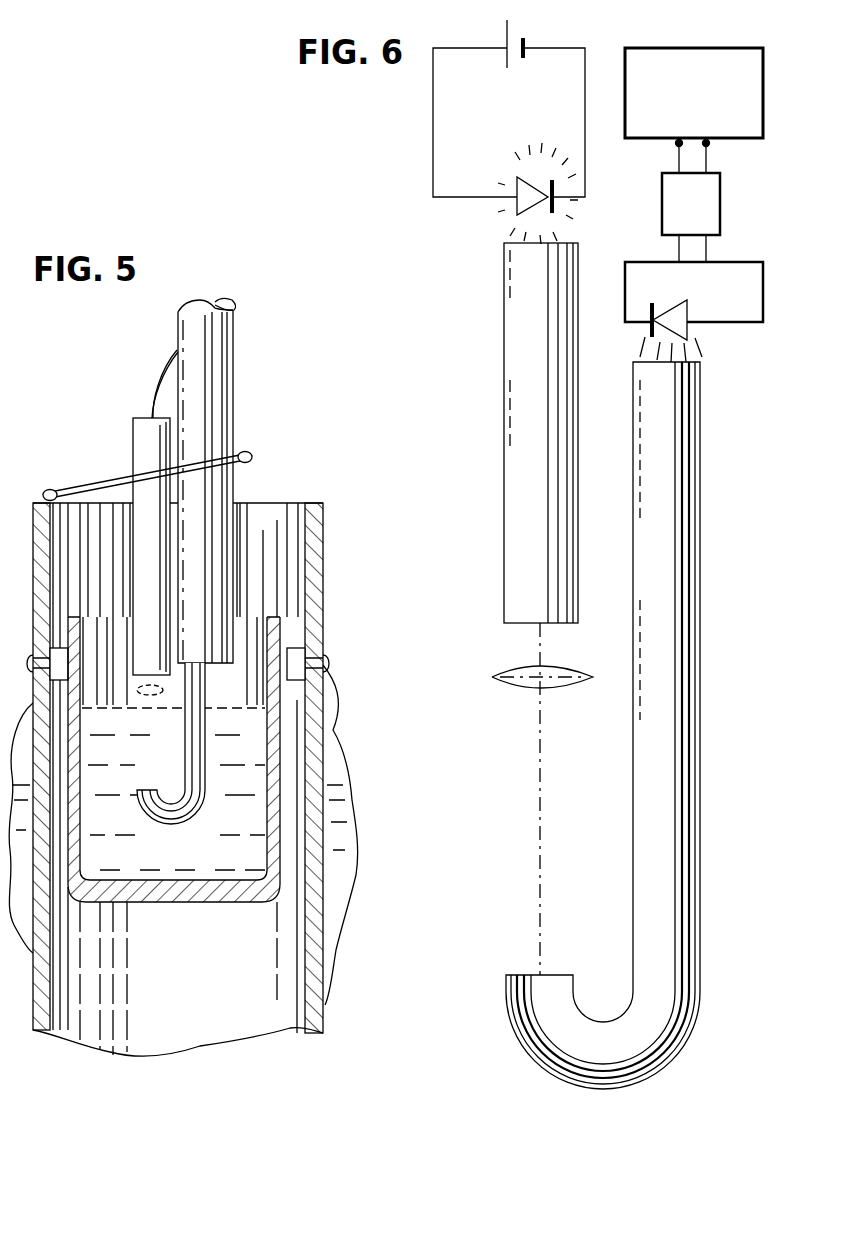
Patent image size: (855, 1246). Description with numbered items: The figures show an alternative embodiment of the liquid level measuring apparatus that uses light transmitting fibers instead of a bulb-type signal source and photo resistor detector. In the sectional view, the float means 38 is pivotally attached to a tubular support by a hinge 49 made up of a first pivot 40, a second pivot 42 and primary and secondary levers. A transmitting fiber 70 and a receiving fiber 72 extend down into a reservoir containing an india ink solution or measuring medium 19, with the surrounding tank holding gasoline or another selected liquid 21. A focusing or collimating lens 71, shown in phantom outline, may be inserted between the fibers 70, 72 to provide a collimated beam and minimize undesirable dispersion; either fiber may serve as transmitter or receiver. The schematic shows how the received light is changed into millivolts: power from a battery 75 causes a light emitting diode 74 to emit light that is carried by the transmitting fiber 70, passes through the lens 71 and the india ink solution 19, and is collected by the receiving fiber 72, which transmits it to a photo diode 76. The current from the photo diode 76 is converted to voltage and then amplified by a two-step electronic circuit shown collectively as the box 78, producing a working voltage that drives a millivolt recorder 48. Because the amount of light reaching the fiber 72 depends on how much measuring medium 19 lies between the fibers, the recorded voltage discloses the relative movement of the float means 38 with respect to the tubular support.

In FIG. 5, the india ink solution 19 is at (214, 868).
In FIG. 5, the gasoline 21 is at (340, 912).
In FIG. 5, the float means 38 is at (324, 575).
In FIG. 5, the first pivot 40 is at (252, 458).
In FIG. 5, the second pivot 42 is at (48, 490).
In FIG. 6, the millivolt recorder 48 is at (688, 96).
In FIG. 5, the hinge 49 is at (91, 476).
In FIG. 5, the transmitting fiber 70 is at (133, 432).
In FIG. 6, the transmitting fiber 70 is at (504, 488).
In FIG. 5, the collimating lens 71 is at (155, 718).
In FIG. 6, the collimating lens 71 is at (518, 688).
In FIG. 5, the receiving fiber 72 is at (205, 787).
In FIG. 6, the receiving fiber 72 is at (701, 822).
In FIG. 6, the light emitting diode 74 is at (515, 200).
In FIG. 6, the battery 75 is at (530, 35).
In FIG. 6, the photo diode 76 is at (683, 303).
In FIG. 6, the means for converting current to voltage 78 is at (680, 214).